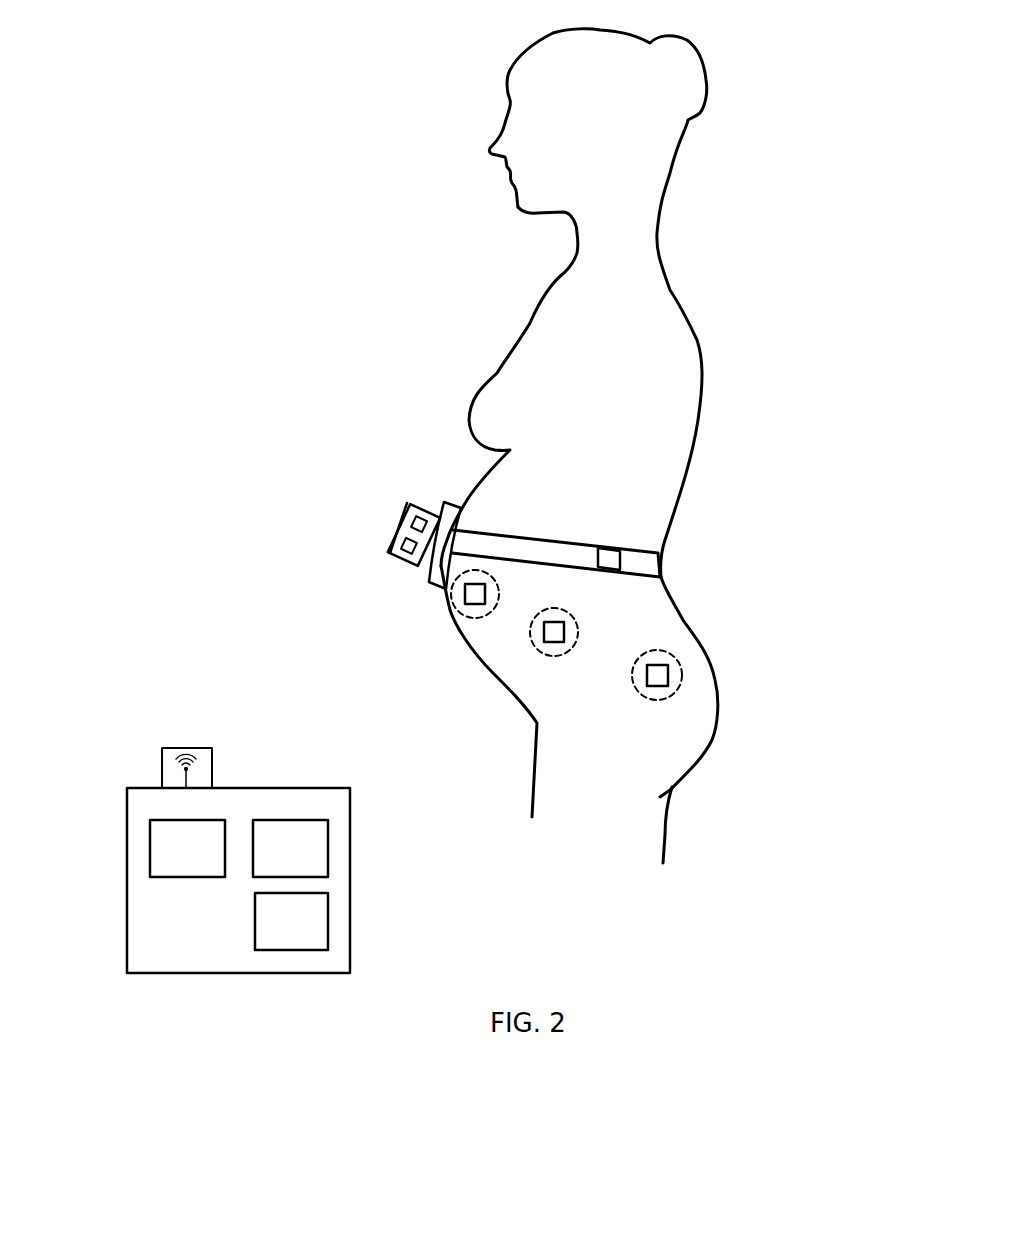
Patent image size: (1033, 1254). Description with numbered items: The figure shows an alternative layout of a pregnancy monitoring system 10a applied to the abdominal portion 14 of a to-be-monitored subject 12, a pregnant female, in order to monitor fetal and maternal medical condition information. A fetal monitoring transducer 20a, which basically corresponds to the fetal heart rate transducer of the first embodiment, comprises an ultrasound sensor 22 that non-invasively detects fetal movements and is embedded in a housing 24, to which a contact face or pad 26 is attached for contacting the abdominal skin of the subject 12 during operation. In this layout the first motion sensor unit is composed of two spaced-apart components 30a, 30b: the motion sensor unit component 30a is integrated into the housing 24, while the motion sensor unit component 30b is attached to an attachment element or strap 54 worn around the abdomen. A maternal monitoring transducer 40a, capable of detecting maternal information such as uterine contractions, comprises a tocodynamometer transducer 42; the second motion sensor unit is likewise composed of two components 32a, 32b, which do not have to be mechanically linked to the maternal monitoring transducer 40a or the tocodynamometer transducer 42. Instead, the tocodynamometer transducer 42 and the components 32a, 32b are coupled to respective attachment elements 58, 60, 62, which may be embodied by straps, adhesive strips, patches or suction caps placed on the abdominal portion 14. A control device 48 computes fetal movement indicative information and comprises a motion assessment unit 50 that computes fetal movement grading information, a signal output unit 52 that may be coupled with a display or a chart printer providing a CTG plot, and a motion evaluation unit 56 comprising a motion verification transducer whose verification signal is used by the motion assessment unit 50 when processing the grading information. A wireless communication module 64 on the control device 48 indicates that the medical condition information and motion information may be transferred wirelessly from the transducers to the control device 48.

The pregnancy monitoring system 10a is at (224, 298).
The to-be-monitored subject 12 is at (478, 288).
The abdominal portion 14 is at (503, 648).
The fetal monitoring transducer 20a is at (365, 516).
The ultrasound sensor 22 is at (420, 503).
The housing 24 is at (397, 540).
The contact face or pad 26 is at (437, 577).
The motion sensor unit component 30a is at (407, 553).
The motion sensor unit component 30b is at (608, 562).
The second motion sensor unit component 32a is at (468, 607).
The second motion sensor unit component 32b is at (663, 675).
The maternal monitoring transducer 40a is at (513, 742).
The tocodynamometer transducer 42 is at (545, 647).
The control device 48 is at (280, 914).
The motion assessment unit 50 is at (197, 862).
The signal output unit 52 is at (328, 863).
The attachment element or strap 54 is at (610, 509).
The motion evaluation unit 56 is at (328, 918).
The attachment element 58 is at (513, 688).
The attachment element 60 is at (429, 630).
The attachment element 62 is at (716, 681).
The wireless communication module 64 is at (162, 763).